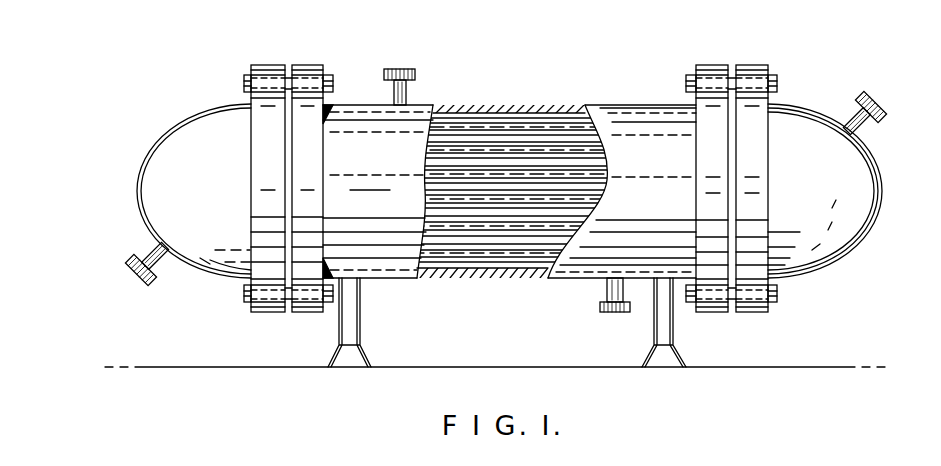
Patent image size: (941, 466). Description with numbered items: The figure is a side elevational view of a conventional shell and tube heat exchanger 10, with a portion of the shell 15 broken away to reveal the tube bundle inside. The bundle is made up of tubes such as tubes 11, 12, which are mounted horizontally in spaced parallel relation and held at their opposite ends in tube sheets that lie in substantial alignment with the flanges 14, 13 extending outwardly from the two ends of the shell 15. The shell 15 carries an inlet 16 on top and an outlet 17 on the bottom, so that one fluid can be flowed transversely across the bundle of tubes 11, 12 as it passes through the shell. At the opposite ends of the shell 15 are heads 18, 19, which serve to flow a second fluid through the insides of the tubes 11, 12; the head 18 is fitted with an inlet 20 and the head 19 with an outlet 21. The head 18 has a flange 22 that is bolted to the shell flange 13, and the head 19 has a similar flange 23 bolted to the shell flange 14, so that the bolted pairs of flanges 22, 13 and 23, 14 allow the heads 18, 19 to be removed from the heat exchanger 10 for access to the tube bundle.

The heat exchanger 10 is at (577, 91).
The tube 11 is at (462, 243).
The tube 12 is at (520, 218).
The shell flange 13 is at (313, 75).
The shell flange 14 is at (708, 78).
The shell 15 is at (424, 105).
The inlet 16 is at (403, 68).
The outlet 17 is at (607, 315).
The head 18 is at (155, 198).
The head 19 is at (862, 176).
The inlet 20 is at (137, 267).
The outlet 21 is at (882, 105).
The head flange 22 is at (267, 77).
The head flange 23 is at (757, 78).